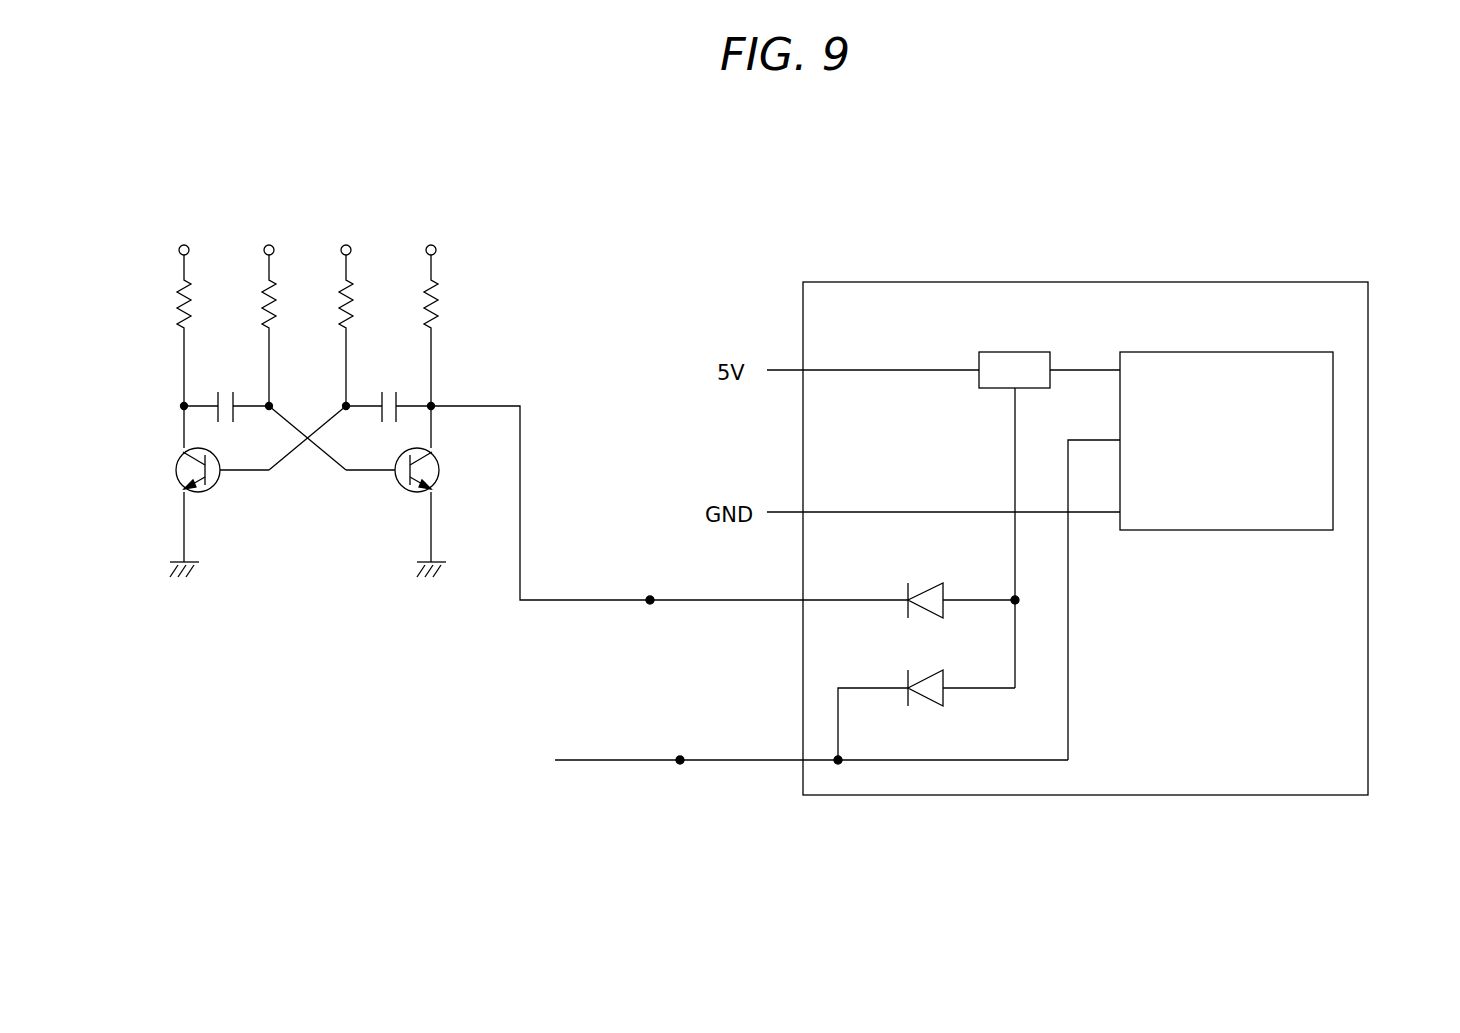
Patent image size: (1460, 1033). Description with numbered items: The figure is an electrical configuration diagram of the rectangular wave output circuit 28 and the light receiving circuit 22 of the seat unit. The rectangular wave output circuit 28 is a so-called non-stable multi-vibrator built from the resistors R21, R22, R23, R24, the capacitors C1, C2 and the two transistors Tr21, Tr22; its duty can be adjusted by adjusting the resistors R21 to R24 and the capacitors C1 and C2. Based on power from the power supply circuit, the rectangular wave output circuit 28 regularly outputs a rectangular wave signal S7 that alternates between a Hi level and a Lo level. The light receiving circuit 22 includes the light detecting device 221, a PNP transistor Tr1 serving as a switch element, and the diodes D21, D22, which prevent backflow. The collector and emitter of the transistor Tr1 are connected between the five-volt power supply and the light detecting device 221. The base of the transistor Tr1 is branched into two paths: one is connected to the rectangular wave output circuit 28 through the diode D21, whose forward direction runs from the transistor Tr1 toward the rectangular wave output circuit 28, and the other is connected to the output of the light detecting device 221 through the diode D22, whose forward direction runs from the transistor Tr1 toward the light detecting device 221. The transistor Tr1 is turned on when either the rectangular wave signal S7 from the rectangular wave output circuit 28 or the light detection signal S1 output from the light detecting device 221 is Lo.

The rectangular wave output circuit 28 is at (478, 190).
The resistor R21 is at (178, 308).
The resistor R22 is at (267, 307).
The resistor R23 is at (345, 307).
The resistor R24 is at (430, 305).
The capacitor C1 is at (180, 402).
The capacitor C2 is at (425, 400).
The transistor Tr21 is at (178, 474).
The transistor Tr22 is at (408, 492).
The rectangular wave signal S7 is at (650, 598).
The light detection signal S1 is at (680, 758).
The light receiving circuit 22 is at (1250, 282).
The PNP transistor Tr1 is at (1023, 352).
The light detecting device 221 is at (1305, 352).
The diode D21 is at (933, 588).
The diode D22 is at (927, 700).